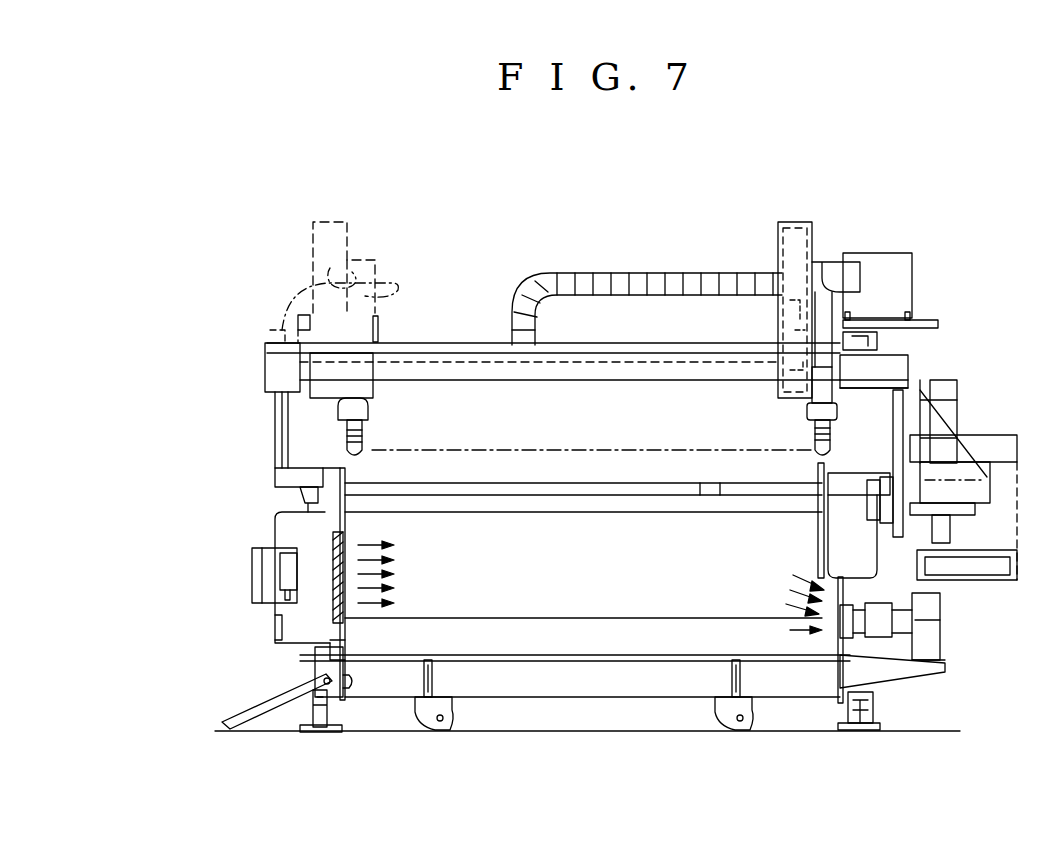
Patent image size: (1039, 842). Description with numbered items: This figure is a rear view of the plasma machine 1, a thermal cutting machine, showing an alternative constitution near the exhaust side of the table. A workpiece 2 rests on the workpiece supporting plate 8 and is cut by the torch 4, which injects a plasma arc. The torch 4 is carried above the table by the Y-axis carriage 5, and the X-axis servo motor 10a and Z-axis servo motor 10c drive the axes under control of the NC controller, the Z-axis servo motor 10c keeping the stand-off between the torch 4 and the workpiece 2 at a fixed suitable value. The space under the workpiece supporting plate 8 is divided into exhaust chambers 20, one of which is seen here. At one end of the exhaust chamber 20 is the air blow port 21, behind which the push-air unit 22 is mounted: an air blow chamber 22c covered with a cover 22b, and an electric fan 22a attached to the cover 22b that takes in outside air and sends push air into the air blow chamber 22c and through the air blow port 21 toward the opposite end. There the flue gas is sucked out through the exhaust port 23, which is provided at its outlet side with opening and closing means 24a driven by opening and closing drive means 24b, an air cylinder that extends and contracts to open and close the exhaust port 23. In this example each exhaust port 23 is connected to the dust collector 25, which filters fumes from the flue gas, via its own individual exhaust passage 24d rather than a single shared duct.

The plasma machine 1 is at (628, 246).
The workpiece 2 is at (511, 449).
The torch 4 is at (806, 430).
The Y-axis carriage 5 is at (443, 343).
The workpiece supporting plate 8 is at (416, 463).
The X-axis servo motor 10a is at (941, 380).
The Z-axis servo motor 10c is at (799, 222).
The exhaust chamber 20 is at (588, 620).
The air blow port 21 is at (348, 537).
The air supply unit 22 is at (203, 603).
The electric fan 22a is at (257, 585).
The cover 22b is at (272, 627).
The air blow chamber 22c is at (277, 532).
The exhaust port 23 is at (832, 634).
The opening and closing means 24a is at (858, 630).
The opening and closing drive means 24b is at (878, 625).
The individual exhaust passage 24d is at (905, 632).
The dust collector 25 is at (930, 626).